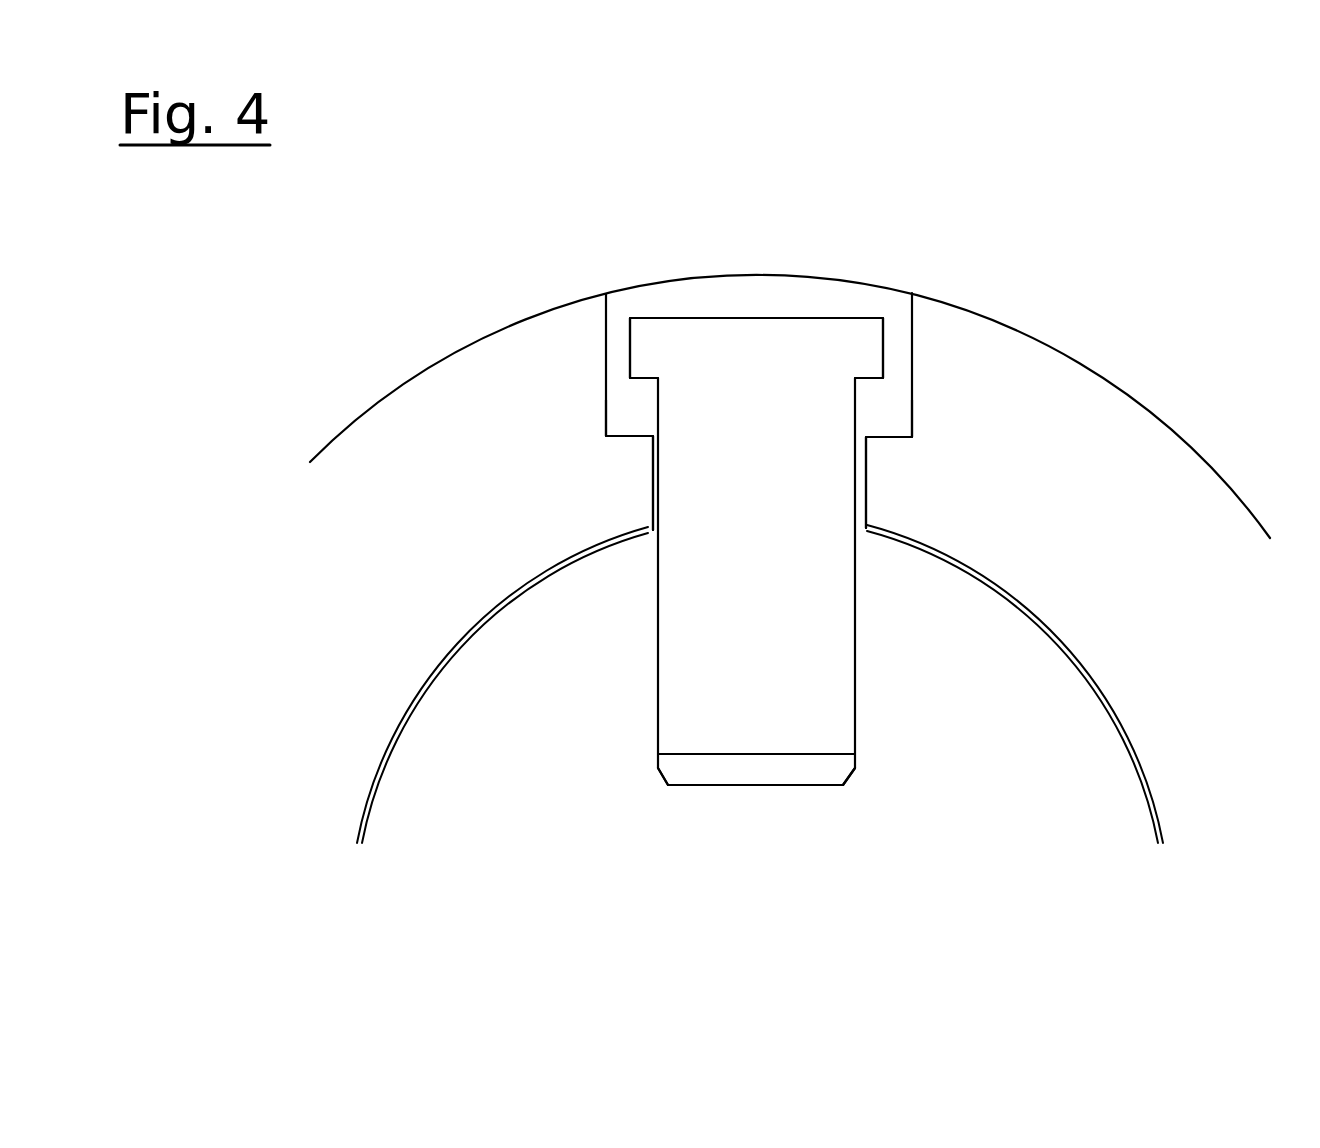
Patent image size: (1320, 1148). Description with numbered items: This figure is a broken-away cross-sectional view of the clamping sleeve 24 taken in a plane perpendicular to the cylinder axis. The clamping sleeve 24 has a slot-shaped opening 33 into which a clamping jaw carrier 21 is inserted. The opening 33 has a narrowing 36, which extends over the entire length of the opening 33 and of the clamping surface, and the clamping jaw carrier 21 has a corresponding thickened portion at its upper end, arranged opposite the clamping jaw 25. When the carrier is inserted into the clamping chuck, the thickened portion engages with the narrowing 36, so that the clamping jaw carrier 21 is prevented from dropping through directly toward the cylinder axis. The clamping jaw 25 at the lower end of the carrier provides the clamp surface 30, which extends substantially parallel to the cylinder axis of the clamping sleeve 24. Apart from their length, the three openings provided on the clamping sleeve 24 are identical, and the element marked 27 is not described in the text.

The clamping jaw carrier 21 is at (698, 644).
The clamping sleeve 24 is at (993, 372).
The clamping jaw 25 is at (815, 774).
The head 27 is at (652, 347).
The clamp surface 30 is at (685, 800).
The opening 33 is at (743, 297).
The narrowing 36 is at (632, 487).